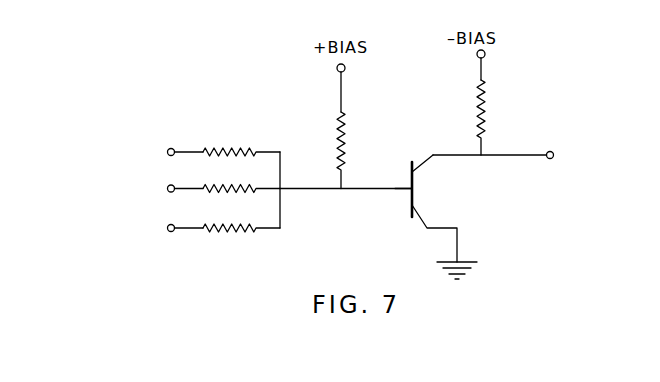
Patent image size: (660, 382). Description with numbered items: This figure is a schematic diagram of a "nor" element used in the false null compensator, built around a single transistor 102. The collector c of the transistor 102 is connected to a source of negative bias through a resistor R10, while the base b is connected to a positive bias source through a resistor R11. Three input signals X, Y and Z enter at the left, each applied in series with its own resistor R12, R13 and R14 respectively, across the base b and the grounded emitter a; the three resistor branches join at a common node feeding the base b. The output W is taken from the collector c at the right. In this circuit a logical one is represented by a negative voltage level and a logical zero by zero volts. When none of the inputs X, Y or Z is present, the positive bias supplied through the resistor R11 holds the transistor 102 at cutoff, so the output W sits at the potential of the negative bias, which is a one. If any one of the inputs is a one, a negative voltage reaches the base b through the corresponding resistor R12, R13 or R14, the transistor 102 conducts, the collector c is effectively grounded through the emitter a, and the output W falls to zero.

The resistor R10 is at (505, 117).
The resistor R11 is at (322, 150).
The resistor R12 is at (241, 133).
The resistor R13 is at (241, 177).
The resistor R14 is at (241, 215).
The transistor 102 is at (420, 188).
The emitter a is at (429, 224).
The base b is at (409, 197).
The collector c is at (425, 162).
The input signal X is at (178, 152).
The input signal Y is at (178, 189).
The input signal Z is at (178, 228).
The output W is at (505, 155).